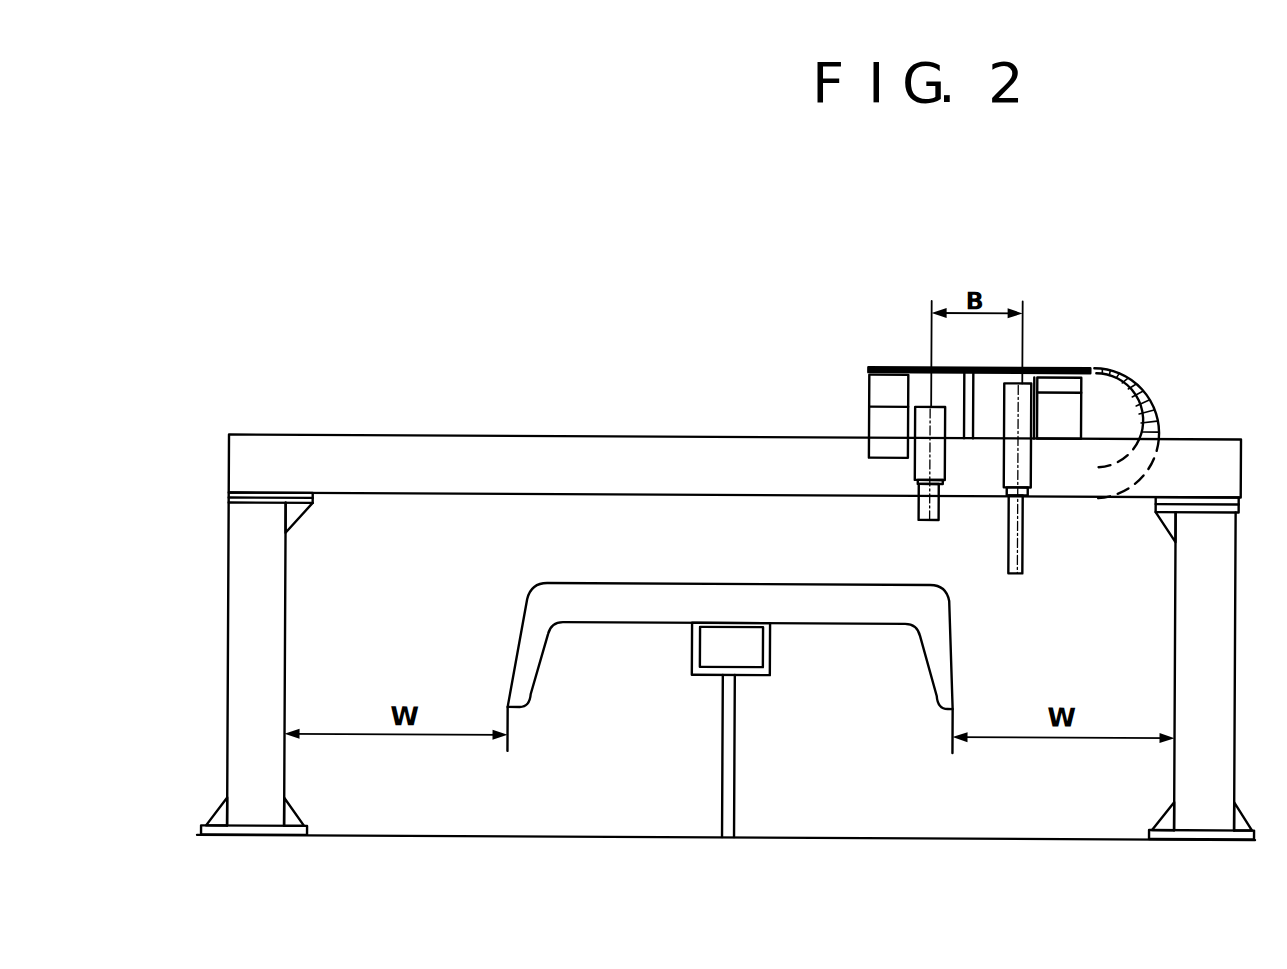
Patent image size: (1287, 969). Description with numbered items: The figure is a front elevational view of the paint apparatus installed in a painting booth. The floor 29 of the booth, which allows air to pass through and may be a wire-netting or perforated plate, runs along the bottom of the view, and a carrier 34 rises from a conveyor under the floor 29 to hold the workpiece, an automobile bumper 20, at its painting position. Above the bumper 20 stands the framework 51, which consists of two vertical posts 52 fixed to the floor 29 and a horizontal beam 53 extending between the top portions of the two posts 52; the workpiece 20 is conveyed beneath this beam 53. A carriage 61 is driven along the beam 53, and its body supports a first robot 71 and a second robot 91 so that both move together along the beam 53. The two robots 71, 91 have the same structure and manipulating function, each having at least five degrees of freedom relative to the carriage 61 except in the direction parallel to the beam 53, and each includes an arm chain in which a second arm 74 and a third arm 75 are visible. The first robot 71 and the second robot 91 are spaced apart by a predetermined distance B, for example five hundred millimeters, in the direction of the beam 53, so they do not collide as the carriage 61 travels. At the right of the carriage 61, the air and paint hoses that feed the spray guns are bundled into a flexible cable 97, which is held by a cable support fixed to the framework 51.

The automobile bumper 20 is at (550, 584).
The floor 29 is at (567, 836).
The carrier 34 is at (735, 792).
The framework 51 is at (728, 587).
The vertical posts 52 is at (285, 611).
The horizontal beam 53 is at (580, 436).
The carriage 61 is at (927, 405).
The first robot 71 is at (954, 462).
The second arm 74 is at (917, 460).
The third arm 75 is at (917, 505).
The second robot 91 is at (1024, 383).
The flexible cable 97 is at (1132, 380).